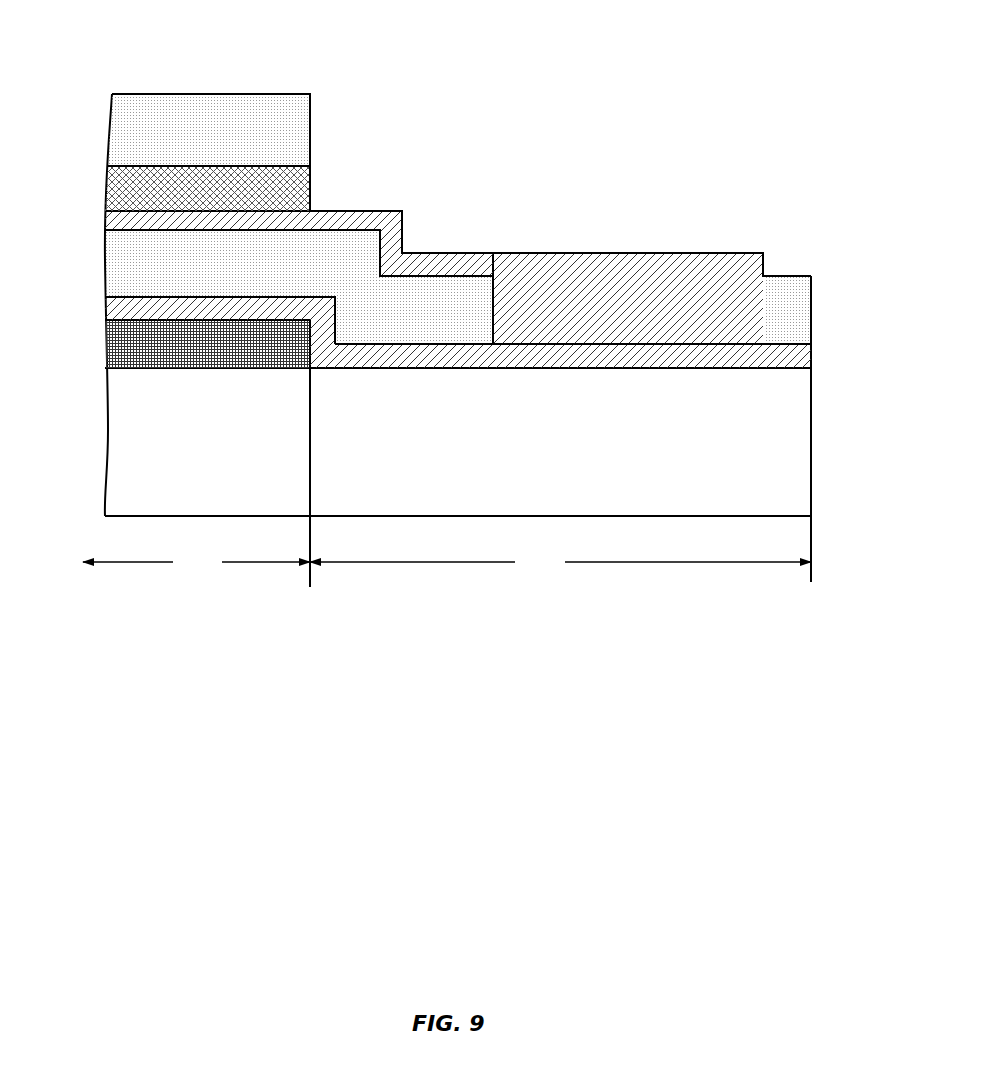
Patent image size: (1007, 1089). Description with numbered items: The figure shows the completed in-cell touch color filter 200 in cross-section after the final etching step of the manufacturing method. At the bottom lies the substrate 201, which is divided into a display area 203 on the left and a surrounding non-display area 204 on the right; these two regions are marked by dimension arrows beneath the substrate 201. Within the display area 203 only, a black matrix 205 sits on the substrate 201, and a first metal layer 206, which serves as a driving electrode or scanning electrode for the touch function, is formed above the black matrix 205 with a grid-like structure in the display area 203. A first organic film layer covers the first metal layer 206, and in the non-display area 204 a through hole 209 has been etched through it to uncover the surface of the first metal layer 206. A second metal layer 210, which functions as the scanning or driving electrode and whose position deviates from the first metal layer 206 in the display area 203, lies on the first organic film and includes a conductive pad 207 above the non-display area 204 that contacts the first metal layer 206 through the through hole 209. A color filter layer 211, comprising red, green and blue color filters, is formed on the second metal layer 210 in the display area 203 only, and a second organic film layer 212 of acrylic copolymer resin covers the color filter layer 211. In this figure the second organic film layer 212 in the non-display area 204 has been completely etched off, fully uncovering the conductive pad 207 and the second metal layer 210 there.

The in-cell touch color filter 200 is at (98, 40).
The substrate 201 is at (793, 478).
The display area 203 is at (196, 562).
The non-display area 204 is at (560, 562).
The black matrix 205 is at (133, 347).
The first metal layer 206 is at (133, 310).
The conductive pad 207 is at (750, 283).
The through hole 209 is at (770, 327).
The second metal layer 210 is at (120, 218).
The color filter layer 211 is at (120, 182).
The second organic film layer 212 is at (127, 130).